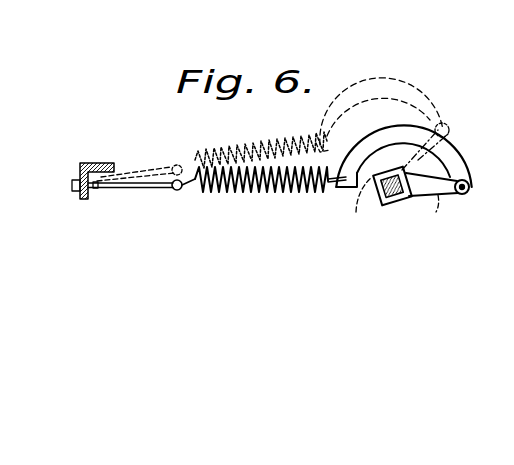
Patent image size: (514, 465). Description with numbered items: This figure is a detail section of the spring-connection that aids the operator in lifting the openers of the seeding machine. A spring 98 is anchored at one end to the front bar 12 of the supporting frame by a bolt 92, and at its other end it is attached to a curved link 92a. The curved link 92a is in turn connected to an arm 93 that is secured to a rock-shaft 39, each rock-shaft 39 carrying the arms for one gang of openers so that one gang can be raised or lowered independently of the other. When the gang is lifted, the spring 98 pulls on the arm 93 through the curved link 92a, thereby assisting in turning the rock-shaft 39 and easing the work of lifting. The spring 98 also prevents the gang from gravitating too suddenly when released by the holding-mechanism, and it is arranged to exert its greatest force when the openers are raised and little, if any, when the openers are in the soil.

The front bar 12 is at (93, 160).
The bolt 92 is at (145, 188).
The curved link 92a is at (389, 88).
The spring 98 is at (220, 150).
The arm 93 is at (404, 207).
The rock-shaft 39 is at (392, 204).